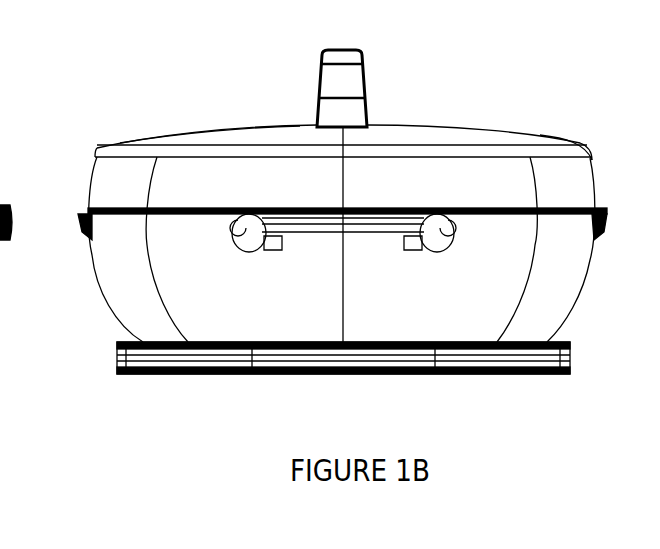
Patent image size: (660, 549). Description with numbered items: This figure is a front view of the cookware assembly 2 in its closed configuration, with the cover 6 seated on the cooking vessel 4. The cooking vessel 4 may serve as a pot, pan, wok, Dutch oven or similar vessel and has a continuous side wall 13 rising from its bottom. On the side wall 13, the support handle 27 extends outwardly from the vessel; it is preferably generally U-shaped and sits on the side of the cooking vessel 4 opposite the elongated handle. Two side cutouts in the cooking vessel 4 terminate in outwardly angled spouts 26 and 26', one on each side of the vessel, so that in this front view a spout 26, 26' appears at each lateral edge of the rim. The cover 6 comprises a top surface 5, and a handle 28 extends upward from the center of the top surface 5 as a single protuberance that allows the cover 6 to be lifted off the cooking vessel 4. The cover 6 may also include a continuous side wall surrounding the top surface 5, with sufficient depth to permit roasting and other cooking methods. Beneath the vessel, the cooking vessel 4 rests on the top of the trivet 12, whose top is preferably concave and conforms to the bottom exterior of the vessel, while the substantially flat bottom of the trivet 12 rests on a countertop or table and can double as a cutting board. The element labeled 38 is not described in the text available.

The cookware assembly 2 is at (488, 72).
The cooking vessel 4 is at (601, 272).
The top surface 5 is at (270, 134).
The cover 6 is at (212, 118).
The trivet 12 is at (578, 350).
The side wall 13 is at (103, 295).
The spout 26 is at (68, 209).
The spout 26' is at (613, 207).
The support handle 27 is at (368, 204).
The handle 28 is at (343, 47).
The lid edge 38 is at (583, 163).